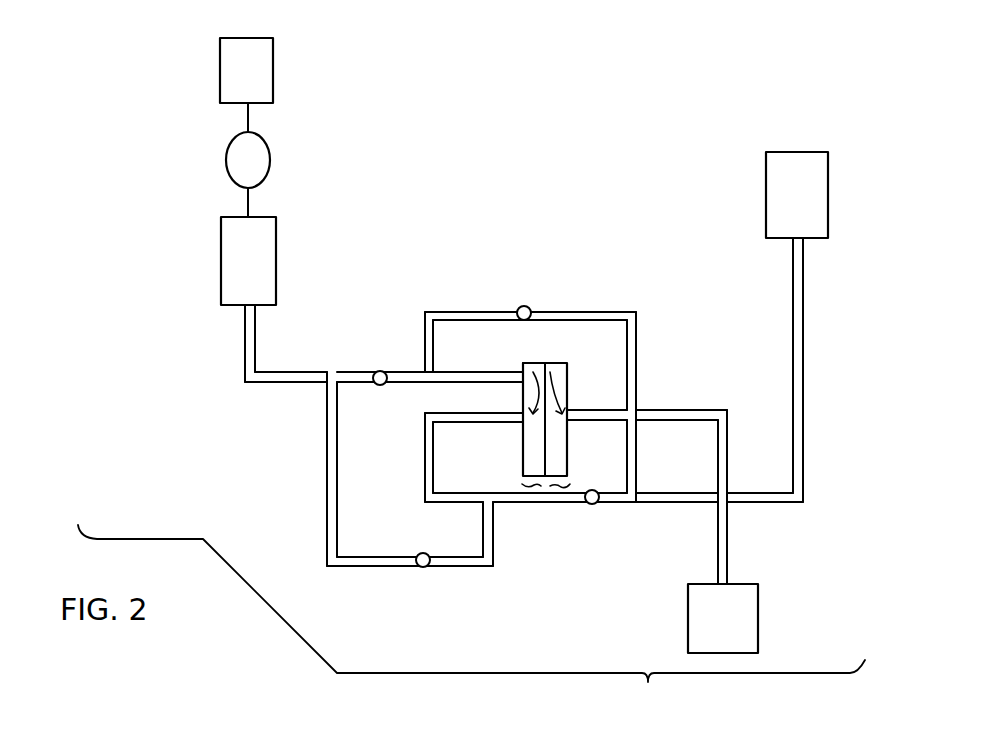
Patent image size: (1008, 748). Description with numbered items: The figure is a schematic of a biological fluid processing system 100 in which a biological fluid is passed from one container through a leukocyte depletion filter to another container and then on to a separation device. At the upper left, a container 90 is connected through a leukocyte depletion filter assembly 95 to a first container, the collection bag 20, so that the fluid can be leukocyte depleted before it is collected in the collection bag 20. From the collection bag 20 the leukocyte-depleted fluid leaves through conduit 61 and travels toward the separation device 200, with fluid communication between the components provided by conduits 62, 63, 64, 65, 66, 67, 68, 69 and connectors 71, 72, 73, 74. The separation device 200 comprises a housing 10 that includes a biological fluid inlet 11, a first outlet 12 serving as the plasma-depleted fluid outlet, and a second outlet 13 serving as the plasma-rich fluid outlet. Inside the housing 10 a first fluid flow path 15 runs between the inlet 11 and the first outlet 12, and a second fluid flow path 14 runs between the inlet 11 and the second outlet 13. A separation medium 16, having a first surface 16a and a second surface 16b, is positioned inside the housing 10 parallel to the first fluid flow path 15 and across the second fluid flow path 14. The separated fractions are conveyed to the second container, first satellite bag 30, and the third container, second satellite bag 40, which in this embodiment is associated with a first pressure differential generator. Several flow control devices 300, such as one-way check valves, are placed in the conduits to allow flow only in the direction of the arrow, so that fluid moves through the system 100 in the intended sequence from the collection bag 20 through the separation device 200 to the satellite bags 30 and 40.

The housing 10 is at (567, 465).
The biological fluid inlet 11 is at (522, 370).
The first outlet 12 is at (520, 422).
The second outlet 13 is at (580, 410).
The second fluid flow path 14 is at (556, 372).
The first fluid flow path 15 is at (533, 394).
The separation medium 16 is at (547, 360).
The first surface 16a is at (545, 455).
The second surface 16b is at (547, 436).
The collection bag 20 is at (220, 297).
The first satellite bag 30 is at (767, 185).
The second satellite bag 40 is at (758, 602).
The conduit 61 is at (273, 384).
The conduit 62 is at (327, 522).
The conduit 63 is at (450, 567).
The conduit 64 is at (425, 470).
The conduit 65 is at (513, 503).
The conduit 66 is at (697, 505).
The conduit 67 is at (468, 312).
The conduit 68 is at (637, 330).
The conduit 69 is at (728, 433).
The connector 71 is at (327, 372).
The connector 72 is at (425, 372).
The connector 73 is at (490, 505).
The connector 74 is at (637, 495).
The container 90 is at (275, 62).
The leukocyte depletion filter assembly 95 is at (270, 157).
The biological fluid processing system 100 is at (471, 619).
The separation device 200 is at (547, 488).
The flow control device 300 is at (386, 390).